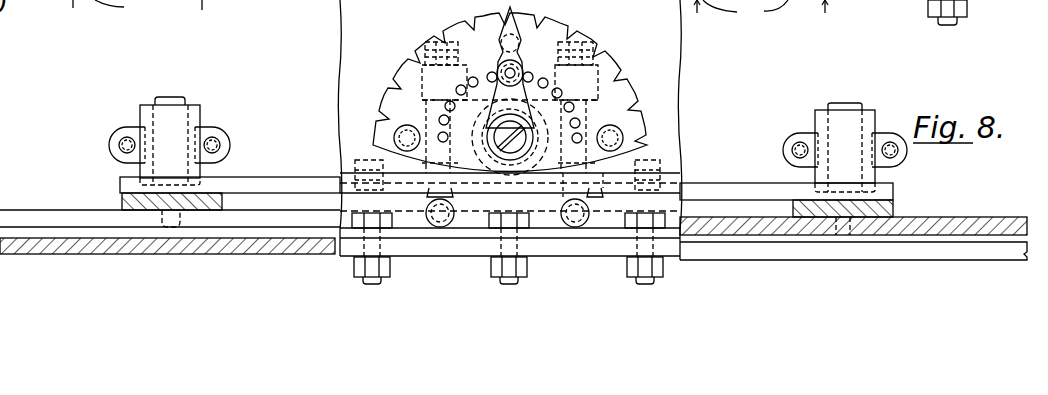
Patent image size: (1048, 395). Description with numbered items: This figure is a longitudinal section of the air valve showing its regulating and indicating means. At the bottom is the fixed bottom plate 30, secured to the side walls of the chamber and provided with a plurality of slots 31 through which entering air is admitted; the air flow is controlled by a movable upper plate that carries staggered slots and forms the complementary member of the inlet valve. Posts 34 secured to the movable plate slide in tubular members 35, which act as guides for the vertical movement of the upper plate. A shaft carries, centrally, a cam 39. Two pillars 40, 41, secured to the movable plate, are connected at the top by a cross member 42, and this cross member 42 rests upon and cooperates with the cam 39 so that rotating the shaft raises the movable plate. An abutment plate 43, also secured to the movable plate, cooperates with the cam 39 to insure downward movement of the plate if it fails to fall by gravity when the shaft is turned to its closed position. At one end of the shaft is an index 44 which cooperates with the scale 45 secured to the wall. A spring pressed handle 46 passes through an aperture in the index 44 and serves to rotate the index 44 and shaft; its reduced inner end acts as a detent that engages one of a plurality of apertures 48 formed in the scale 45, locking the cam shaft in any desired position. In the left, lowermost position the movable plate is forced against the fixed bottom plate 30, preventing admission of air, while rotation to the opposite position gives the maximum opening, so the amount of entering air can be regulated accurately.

The bottom plate 30 is at (80, 245).
The slots 31 is at (448, 15).
The posts 34 is at (170, 100).
The tubular members 35 is at (140, 168).
The cam 39 is at (473, 118).
The pillar 40 is at (423, 123).
The pillar 41 is at (590, 120).
The cross member 42 is at (590, 88).
The abutment plate 43 is at (588, 186).
The index 44 is at (520, 20).
The scale 45 is at (600, 46).
The spring pressed handle 46 is at (500, 64).
The apertures 48 is at (458, 89).